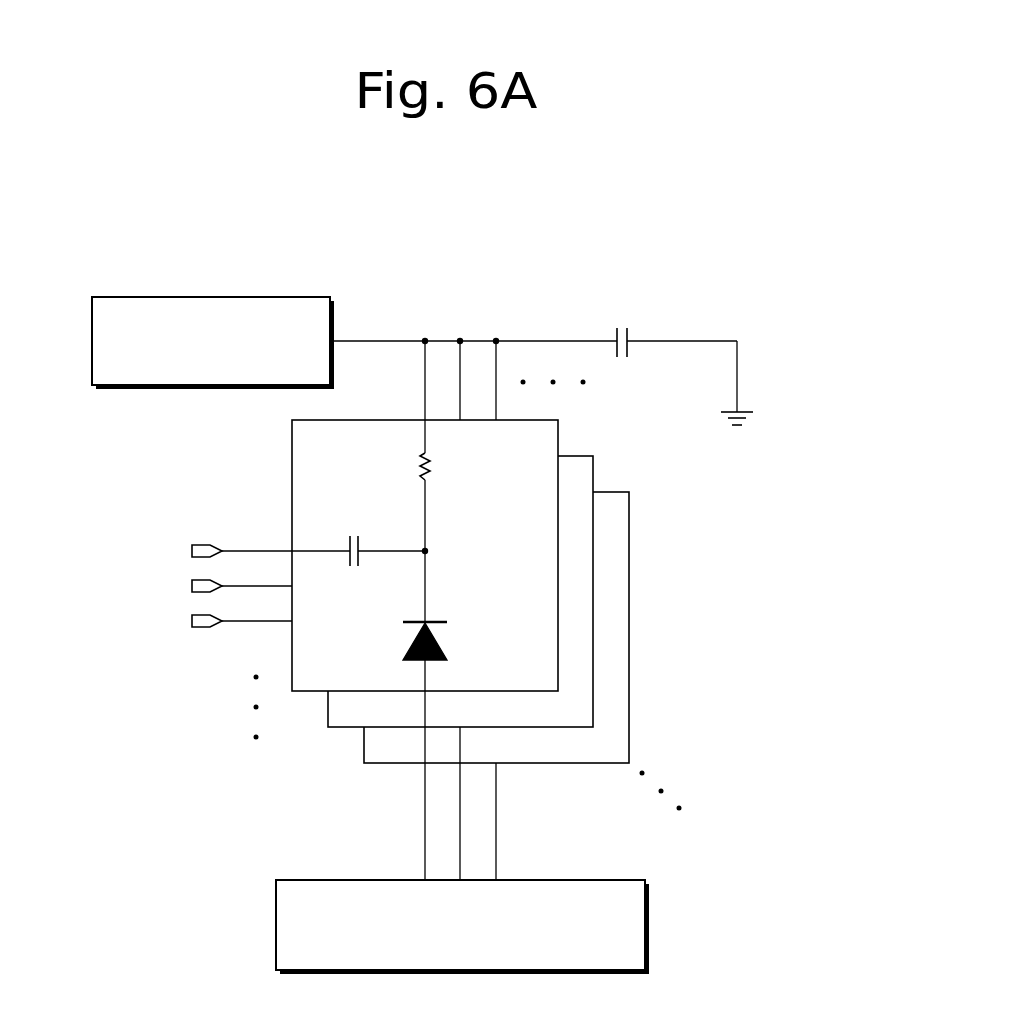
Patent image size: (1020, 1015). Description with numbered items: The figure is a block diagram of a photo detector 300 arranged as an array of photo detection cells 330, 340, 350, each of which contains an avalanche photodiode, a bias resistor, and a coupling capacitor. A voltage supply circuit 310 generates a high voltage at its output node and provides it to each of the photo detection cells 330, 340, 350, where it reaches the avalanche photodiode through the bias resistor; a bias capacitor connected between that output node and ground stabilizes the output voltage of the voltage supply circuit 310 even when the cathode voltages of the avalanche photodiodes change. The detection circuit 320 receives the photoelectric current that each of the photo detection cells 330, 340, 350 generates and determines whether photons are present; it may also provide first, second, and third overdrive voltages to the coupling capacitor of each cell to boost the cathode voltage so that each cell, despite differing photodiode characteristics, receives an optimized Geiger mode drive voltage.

The photo detector 300 is at (669, 214).
The voltage supply circuit 310 is at (287, 297).
The detection circuit 320 is at (649, 925).
The photo detection cell 330 is at (558, 571).
The photo detection cell 340 is at (593, 620).
The photo detection cell 350 is at (629, 673).